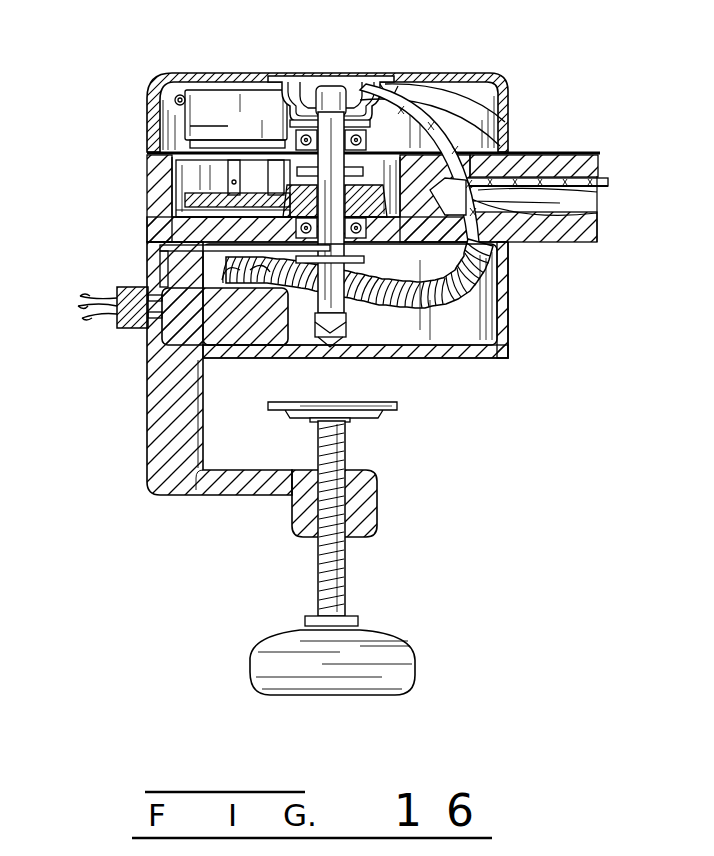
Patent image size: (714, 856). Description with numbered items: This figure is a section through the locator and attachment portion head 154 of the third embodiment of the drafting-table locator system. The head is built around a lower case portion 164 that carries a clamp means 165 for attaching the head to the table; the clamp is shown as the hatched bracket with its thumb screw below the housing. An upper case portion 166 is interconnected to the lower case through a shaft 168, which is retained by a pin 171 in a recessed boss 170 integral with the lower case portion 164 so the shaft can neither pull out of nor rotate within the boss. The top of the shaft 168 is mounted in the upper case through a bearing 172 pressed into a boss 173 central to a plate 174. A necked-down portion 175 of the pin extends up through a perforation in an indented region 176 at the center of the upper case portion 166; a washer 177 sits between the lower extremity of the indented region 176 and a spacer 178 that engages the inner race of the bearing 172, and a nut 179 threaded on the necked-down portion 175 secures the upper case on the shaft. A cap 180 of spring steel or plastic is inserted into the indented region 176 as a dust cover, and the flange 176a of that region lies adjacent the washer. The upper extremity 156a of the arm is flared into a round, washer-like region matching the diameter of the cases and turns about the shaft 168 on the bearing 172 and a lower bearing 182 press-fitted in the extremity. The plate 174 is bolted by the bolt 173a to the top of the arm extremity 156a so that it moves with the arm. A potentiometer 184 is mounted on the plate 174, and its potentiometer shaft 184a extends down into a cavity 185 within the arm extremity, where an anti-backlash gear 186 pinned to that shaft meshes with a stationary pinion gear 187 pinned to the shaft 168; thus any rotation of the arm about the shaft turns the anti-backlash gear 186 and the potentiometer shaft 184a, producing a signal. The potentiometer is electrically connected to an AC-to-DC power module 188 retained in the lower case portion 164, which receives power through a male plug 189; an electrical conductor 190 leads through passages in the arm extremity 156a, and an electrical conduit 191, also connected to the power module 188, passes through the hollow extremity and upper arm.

The locator and attachment portion head 154 is at (138, 76).
The plate 174 is at (150, 138).
The potentiometer 184 is at (236, 119).
The potentiometer shaft 184a is at (192, 166).
The cavity 185 is at (192, 172).
The anti-backlash gear 186 is at (196, 196).
The pinion gear 187 is at (270, 230).
The lower bearing 182 is at (240, 256).
The male plug 189 is at (117, 300).
The AC-to-DC power module 188 is at (192, 322).
The necked-down portion 175 is at (292, 92).
The indented region 176 is at (310, 70).
The cap flange 176a is at (384, 98).
The nut 179 is at (357, 83).
The cap 180 is at (358, 104).
The upper case portion 166 is at (486, 74).
The washer 177 is at (463, 104).
The spacer 178 is at (472, 130).
The bolt 173a is at (418, 119).
The boss 173 is at (500, 160).
The bearing 172 is at (478, 146).
The upper extremity of the arm 156a is at (592, 152).
The electrical conduit 191 is at (608, 183).
The electrical conductor 190 is at (597, 215).
The pin 171 is at (350, 310).
The recessed boss 170 is at (358, 328).
The lower case portion 164 is at (510, 358).
The clamp means 165 is at (256, 512).
The shaft 168 is at (313, 318).